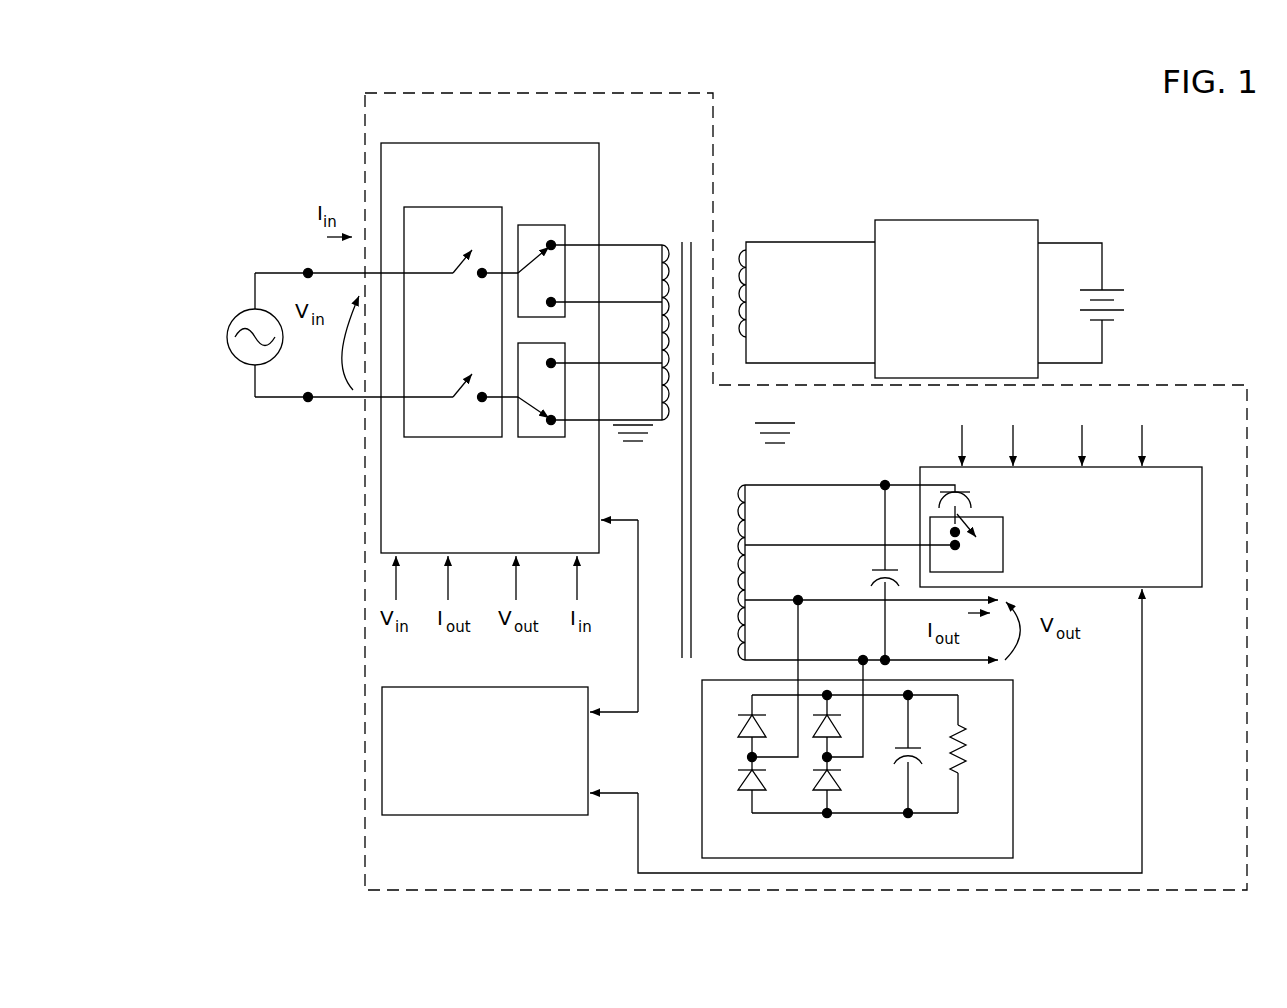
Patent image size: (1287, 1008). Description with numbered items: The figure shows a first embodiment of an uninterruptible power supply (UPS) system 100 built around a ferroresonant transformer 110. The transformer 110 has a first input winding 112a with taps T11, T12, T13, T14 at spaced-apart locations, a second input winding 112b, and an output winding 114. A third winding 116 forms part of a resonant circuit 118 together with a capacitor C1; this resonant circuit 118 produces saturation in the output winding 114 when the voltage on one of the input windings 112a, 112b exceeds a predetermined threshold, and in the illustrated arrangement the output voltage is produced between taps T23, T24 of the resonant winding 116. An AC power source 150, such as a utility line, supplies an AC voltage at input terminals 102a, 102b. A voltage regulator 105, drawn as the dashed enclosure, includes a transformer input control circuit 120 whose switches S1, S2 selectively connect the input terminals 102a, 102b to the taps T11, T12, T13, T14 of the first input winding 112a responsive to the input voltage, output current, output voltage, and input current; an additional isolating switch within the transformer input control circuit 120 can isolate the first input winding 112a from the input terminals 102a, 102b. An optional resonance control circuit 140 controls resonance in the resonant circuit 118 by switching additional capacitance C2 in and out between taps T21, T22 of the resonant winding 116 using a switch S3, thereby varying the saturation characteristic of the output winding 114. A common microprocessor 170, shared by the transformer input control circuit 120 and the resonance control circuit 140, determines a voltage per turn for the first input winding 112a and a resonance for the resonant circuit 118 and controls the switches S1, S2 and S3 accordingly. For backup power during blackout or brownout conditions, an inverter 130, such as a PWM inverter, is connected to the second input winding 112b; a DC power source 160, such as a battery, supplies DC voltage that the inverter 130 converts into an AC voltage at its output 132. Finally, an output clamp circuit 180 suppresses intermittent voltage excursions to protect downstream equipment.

The uninterruptible power supply (UPS) system 100 is at (270, 779).
The input terminal 102a is at (306, 270).
The input terminal 102b is at (306, 400).
The voltage regulator 105 is at (363, 670).
The ferroresonant transformer 110 is at (790, 421).
The first input winding 112a is at (666, 308).
The second input winding 112b is at (750, 293).
The output winding 114 is at (804, 677).
The third winding 116 is at (804, 499).
The resonant circuit 118 is at (843, 471).
The transformer input control circuit 120 is at (513, 324).
The inverter 130 is at (995, 217).
The output of the inverter 132 is at (870, 236).
The resonance control circuit 140 is at (1064, 517).
The AC power source 150 is at (223, 339).
The DC power source 160 is at (1136, 303).
The microprocessor 170 is at (537, 817).
The output clamp circuit 180 is at (1015, 753).
The switch S1 is at (553, 225).
The switch S2 is at (552, 439).
The switch S3 is at (1003, 543).
The capacitor C1 is at (868, 574).
The additional capacitance C2 is at (972, 500).
The tap T11 is at (632, 243).
The tap T12 is at (631, 300).
The tap T13 is at (631, 361).
The tap T14 is at (631, 418).
The tap T21 is at (781, 477).
The tap T22 is at (781, 535).
The tap T23 is at (781, 592).
The tap T24 is at (781, 651).